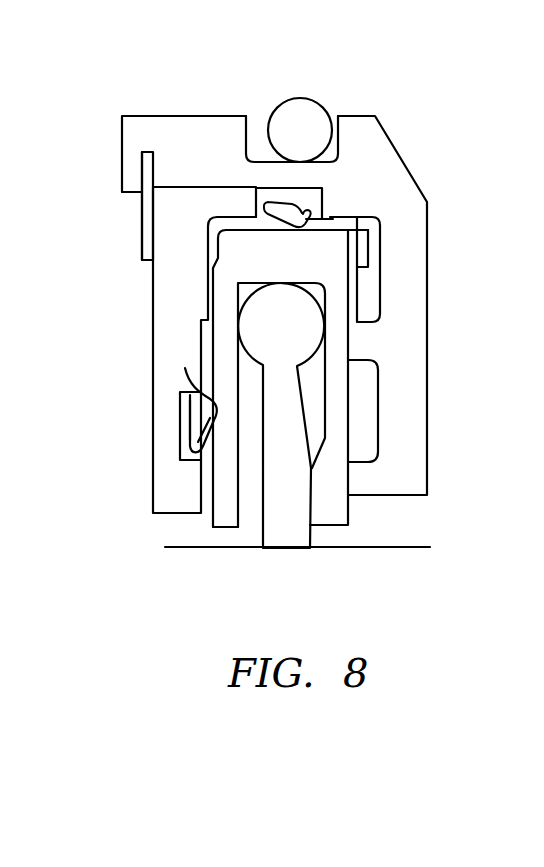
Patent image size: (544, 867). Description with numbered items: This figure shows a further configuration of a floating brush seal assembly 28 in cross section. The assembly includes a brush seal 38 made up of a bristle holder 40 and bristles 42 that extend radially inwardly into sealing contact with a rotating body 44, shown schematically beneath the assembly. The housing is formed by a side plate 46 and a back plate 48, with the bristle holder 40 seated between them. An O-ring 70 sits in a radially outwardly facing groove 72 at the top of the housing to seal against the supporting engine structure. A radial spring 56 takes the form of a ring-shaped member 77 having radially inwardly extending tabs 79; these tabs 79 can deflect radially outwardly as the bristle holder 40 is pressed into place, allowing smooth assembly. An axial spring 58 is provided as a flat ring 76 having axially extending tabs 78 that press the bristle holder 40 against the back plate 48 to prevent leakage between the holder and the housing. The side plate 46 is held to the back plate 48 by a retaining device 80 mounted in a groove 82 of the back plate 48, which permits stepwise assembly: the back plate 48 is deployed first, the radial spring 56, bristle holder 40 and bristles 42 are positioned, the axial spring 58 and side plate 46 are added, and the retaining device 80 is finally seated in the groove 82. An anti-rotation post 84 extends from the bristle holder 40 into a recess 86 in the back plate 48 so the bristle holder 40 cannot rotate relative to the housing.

The floating brush seal assembly 28 is at (457, 146).
The brush seal 38 is at (368, 382).
The bristle holder 40 is at (342, 400).
The bristles 42 is at (283, 516).
The rotating body 44 is at (393, 548).
The side plate 46 is at (167, 292).
The back plate 48 is at (420, 310).
The radial spring 56 is at (297, 205).
The axial spring 58 is at (193, 420).
The O-ring 70 is at (313, 112).
The radially outwardly facing groove 72 is at (261, 160).
The flat ring 76 is at (181, 441).
The ring-shaped member 77 is at (267, 187).
The axially extending tabs 78 is at (186, 375).
The radially inwardly extending tabs 79 is at (333, 219).
The retaining device 80 is at (146, 222).
The groove 82 is at (151, 155).
The post 84 is at (363, 242).
The recess 86 is at (370, 260).